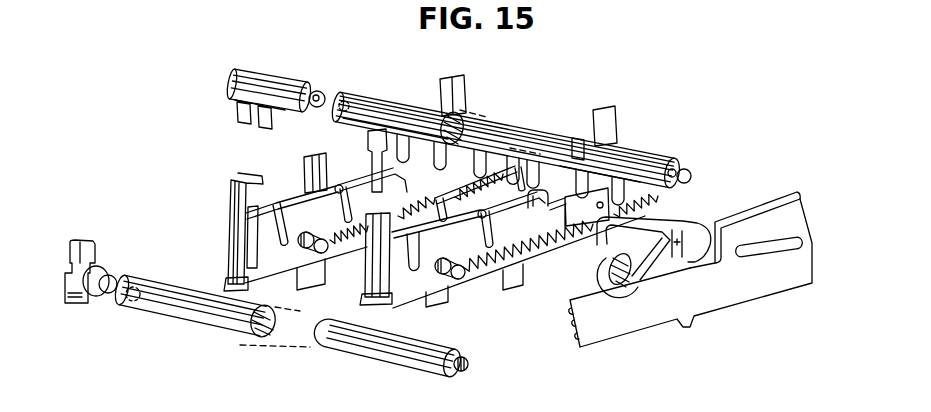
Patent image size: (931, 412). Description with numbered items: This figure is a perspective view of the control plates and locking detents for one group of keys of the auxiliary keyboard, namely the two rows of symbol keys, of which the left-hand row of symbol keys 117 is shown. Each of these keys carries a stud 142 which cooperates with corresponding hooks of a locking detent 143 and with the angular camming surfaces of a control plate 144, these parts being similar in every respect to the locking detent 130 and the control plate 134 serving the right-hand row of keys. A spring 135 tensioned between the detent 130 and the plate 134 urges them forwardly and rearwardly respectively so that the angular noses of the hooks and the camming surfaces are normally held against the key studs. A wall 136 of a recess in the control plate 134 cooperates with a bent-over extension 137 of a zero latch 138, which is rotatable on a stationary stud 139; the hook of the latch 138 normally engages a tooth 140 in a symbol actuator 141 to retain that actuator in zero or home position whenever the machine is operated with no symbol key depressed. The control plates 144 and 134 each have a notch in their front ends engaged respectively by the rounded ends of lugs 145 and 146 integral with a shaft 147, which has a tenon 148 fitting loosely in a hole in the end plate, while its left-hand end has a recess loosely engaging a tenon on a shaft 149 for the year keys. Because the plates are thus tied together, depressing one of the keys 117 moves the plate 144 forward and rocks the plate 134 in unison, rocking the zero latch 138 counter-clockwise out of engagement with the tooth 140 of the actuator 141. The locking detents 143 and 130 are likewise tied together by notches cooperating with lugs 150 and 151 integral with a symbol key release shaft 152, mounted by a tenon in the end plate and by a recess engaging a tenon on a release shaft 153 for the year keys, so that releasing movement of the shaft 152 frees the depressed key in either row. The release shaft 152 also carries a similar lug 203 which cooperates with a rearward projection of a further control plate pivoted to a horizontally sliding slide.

The symbol keys 117 is at (303, 162).
The locking detent 130 is at (546, 209).
The control plate 134 is at (418, 296).
The spring 135 is at (500, 279).
The wall 136 is at (600, 152).
The bent-over extension 137 is at (612, 180).
The zero latch 138 is at (683, 221).
The stationary stud 139 is at (606, 270).
The tooth 140 is at (705, 222).
The symbol actuator 141 is at (803, 193).
The stud 142 is at (240, 198).
The locking detent 143 is at (368, 160).
The control plate 144 is at (247, 239).
The lug 145 is at (222, 284).
The lug 146 is at (350, 312).
The shaft 147 is at (264, 334).
The tenon 148 is at (470, 366).
The shaft 149 is at (70, 304).
The lug 150 is at (428, 118).
The lug 151 is at (578, 140).
The symbol key release shaft 152 is at (460, 112).
The release shaft 153 is at (261, 80).
The lug 203 is at (408, 115).